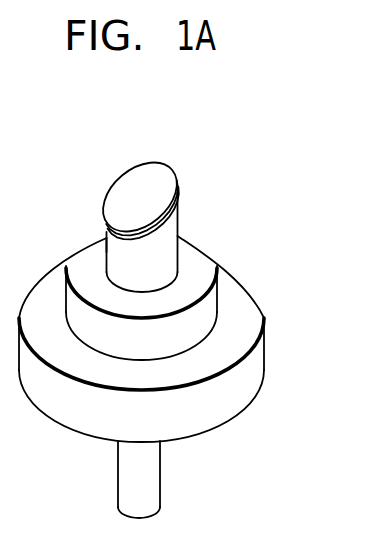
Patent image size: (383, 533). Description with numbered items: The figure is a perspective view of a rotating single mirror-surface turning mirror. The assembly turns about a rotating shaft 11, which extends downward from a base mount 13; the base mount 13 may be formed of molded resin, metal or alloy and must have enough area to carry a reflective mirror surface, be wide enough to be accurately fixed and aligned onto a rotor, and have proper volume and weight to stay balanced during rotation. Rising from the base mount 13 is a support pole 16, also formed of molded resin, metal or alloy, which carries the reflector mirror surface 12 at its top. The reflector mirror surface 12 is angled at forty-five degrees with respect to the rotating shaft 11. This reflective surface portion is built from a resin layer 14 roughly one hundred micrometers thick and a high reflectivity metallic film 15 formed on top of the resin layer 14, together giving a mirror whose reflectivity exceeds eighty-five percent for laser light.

The rotating shaft 11 is at (150, 492).
The reflector mirror surface 12 is at (147, 150).
The base mount 13 is at (252, 382).
The resin layer 14 is at (178, 230).
The high reflectivity metallic film 15 is at (177, 192).
The support pole 16 is at (120, 249).